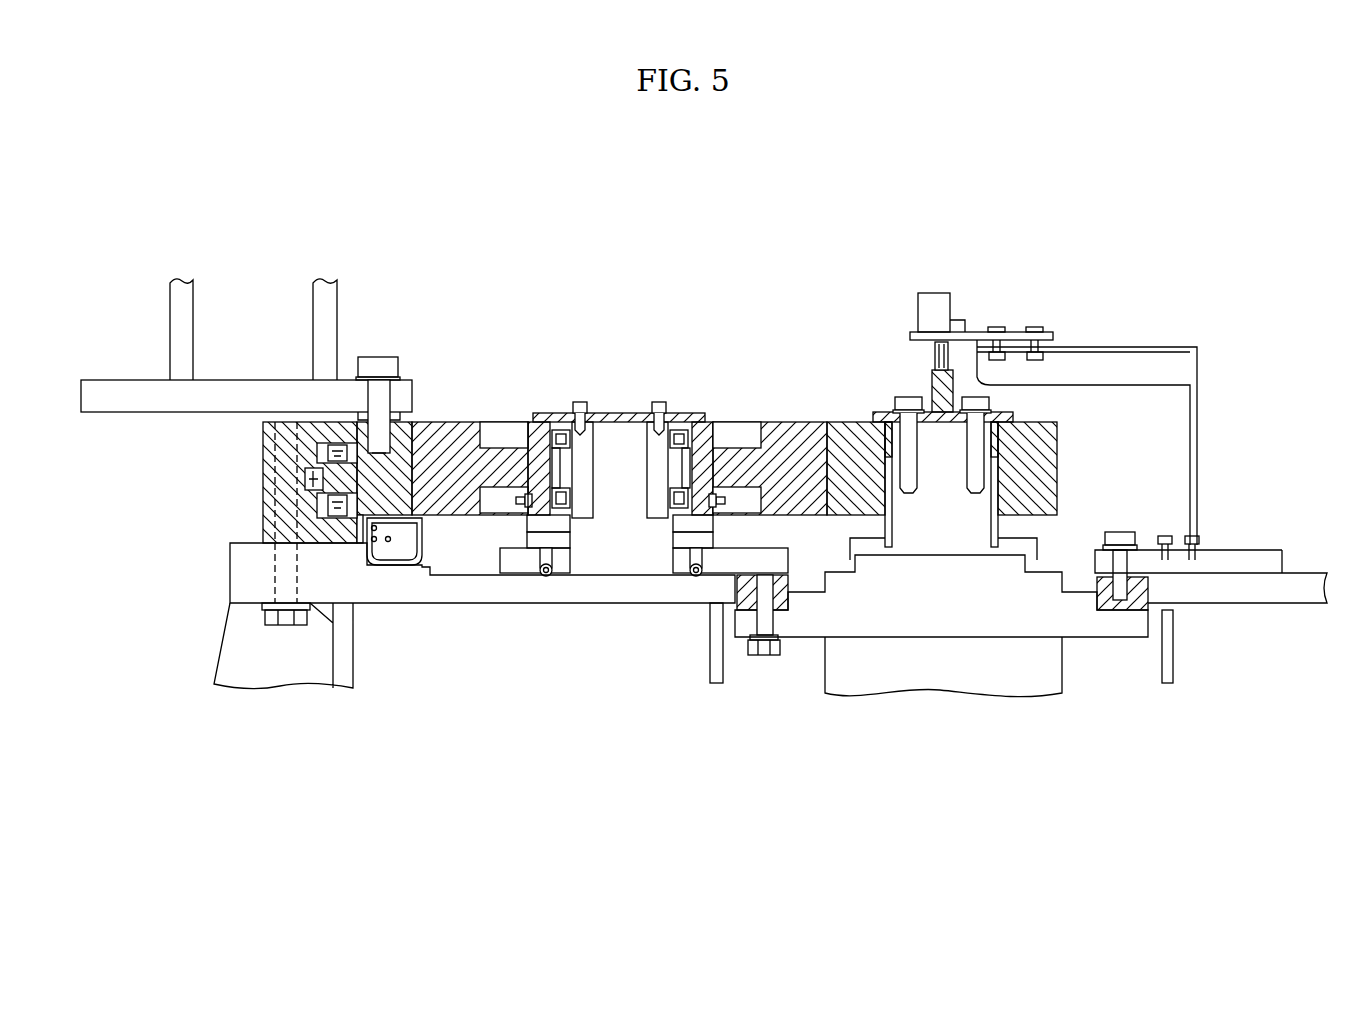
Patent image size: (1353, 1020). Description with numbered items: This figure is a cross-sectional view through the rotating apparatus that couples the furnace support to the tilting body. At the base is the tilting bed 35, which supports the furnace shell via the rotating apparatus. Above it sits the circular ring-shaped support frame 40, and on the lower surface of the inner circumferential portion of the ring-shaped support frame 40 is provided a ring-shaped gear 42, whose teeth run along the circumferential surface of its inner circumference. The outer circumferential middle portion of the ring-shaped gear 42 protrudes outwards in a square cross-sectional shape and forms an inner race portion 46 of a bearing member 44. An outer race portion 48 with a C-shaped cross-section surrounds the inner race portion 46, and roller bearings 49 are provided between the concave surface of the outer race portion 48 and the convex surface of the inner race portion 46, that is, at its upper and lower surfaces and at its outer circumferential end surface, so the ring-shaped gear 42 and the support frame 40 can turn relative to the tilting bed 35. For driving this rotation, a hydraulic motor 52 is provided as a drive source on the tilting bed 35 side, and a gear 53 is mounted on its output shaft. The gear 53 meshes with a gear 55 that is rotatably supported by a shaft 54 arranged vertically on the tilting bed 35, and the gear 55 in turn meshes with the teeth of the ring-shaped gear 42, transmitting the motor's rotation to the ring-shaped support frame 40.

The tilting bed 35 is at (578, 590).
The ring-shaped support frame 40 is at (318, 322).
The ring-shaped gear 42 is at (398, 463).
The bearing member 44 is at (262, 447).
The inner race portion 46 is at (338, 477).
The outer race portion 48 is at (300, 523).
The roller bearings 49 is at (338, 450).
The hydraulic motor 52 is at (840, 665).
The gear 53 is at (1027, 453).
The shaft 54 is at (621, 440).
The gear 55 is at (806, 433).